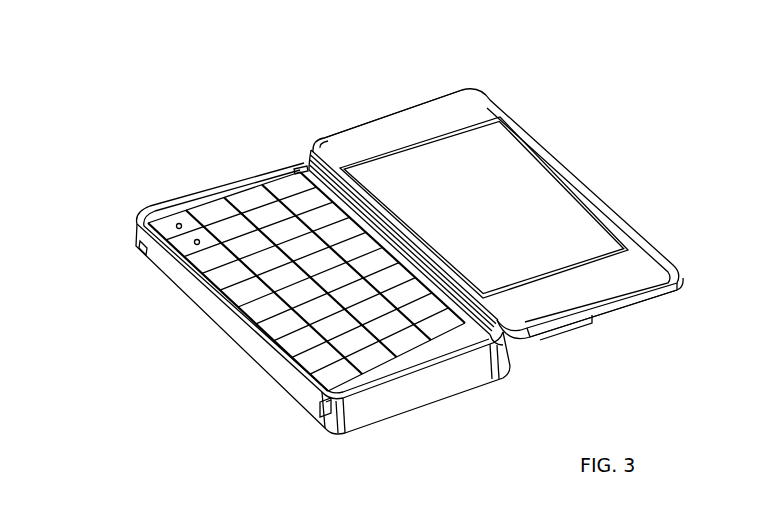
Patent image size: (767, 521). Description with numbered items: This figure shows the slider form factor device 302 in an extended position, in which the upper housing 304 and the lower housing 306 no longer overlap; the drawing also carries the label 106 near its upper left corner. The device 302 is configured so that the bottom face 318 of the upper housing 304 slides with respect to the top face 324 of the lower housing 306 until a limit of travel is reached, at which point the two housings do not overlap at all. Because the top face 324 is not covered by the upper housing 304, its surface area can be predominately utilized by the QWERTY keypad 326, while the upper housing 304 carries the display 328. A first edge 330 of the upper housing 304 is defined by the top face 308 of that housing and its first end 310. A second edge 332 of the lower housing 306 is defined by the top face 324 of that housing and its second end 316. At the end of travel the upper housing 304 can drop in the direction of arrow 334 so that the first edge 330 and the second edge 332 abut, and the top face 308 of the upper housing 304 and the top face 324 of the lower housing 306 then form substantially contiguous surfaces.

The handheld electronic device 106 is at (101, 1).
The slider form factor device 302 is at (604, 66).
The upper housing 304 is at (490, 100).
The lower housing 306 is at (320, 420).
The top face of the first housing 308 is at (422, 118).
The first end of the first housing 310 is at (493, 325).
The second end of the second housing 316 is at (503, 373).
The bottom face of the upper housing 318 is at (630, 313).
The top face of the lower housing 324 is at (210, 192).
The QWERTY keypad 326 is at (187, 213).
The display 328 is at (545, 200).
The first edge 330 is at (318, 164).
The second edge 332 is at (302, 168).
The arrow 334 is at (713, 292).